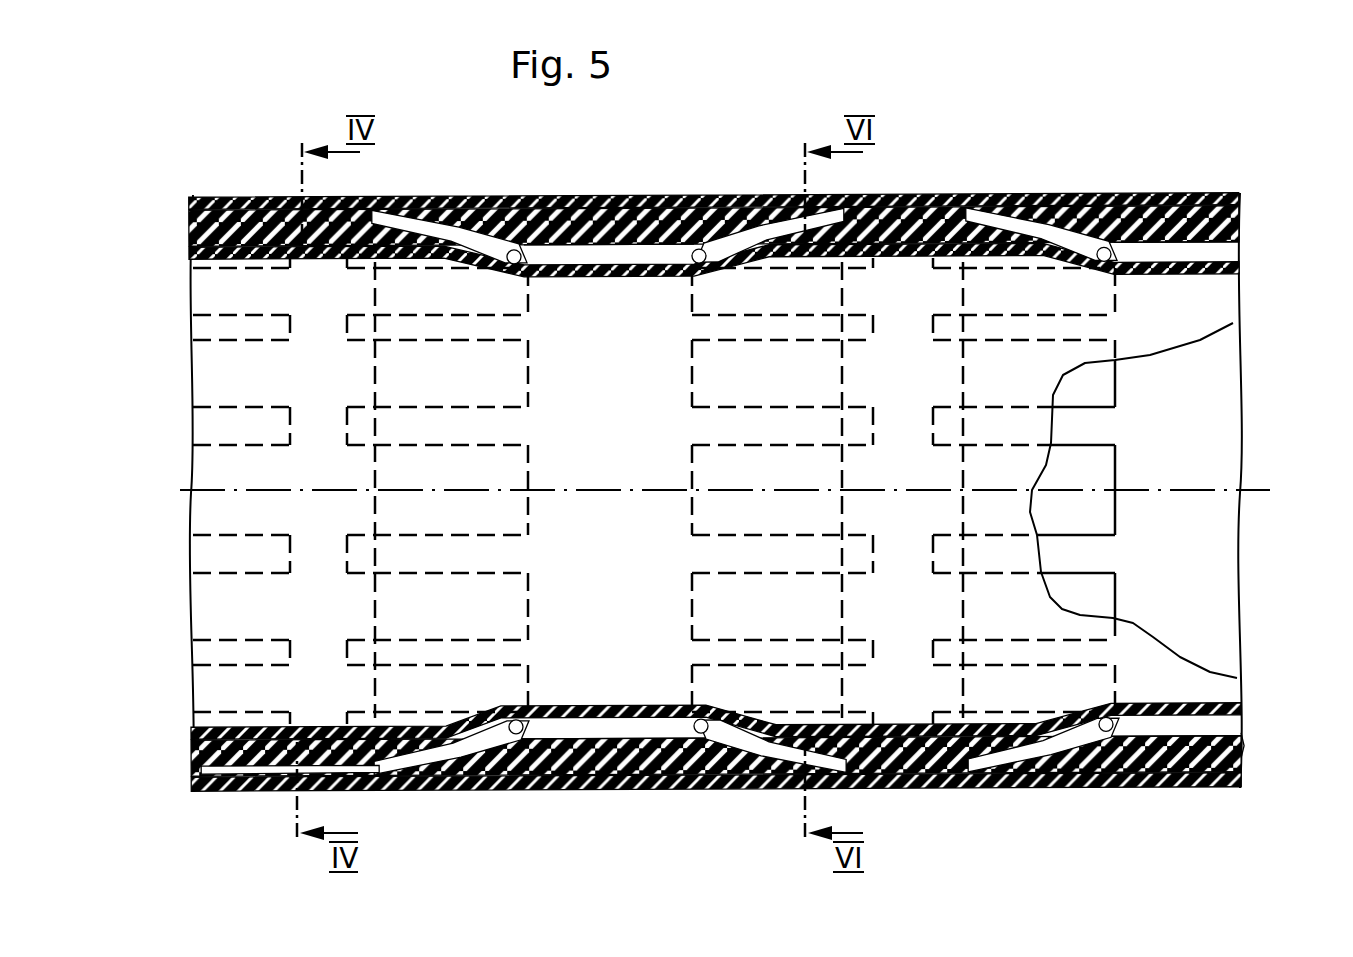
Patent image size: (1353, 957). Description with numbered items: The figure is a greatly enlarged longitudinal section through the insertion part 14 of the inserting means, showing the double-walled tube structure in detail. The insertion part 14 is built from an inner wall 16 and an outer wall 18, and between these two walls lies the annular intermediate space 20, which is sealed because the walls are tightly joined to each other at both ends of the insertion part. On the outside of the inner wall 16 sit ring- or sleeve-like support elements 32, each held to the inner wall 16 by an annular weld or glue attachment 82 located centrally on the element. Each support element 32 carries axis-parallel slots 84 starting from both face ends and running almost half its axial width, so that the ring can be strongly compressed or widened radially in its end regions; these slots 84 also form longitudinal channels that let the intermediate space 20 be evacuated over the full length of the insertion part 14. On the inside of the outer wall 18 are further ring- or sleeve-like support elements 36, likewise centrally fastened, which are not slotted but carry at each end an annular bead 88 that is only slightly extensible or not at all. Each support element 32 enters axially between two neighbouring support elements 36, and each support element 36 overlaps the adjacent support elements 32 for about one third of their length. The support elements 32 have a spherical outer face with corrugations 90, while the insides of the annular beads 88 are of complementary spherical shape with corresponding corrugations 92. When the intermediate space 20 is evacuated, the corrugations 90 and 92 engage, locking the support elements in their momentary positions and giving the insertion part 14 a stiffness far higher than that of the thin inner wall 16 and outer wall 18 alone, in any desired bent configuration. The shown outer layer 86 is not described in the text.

The insertion part 14 is at (713, 156).
The inner wall 16 is at (1243, 268).
The outer wall 18 is at (1236, 200).
The intermediate space 20 is at (190, 215).
The support elements 32 is at (178, 754).
The support elements 36 is at (1250, 752).
The weld or glue attachment 82 is at (320, 262).
The slots 84 is at (715, 430).
The outer layer 86 is at (612, 196).
The annular bead 88 is at (450, 212).
The corrugations 90 is at (198, 758).
The corrugations 92 is at (940, 772).